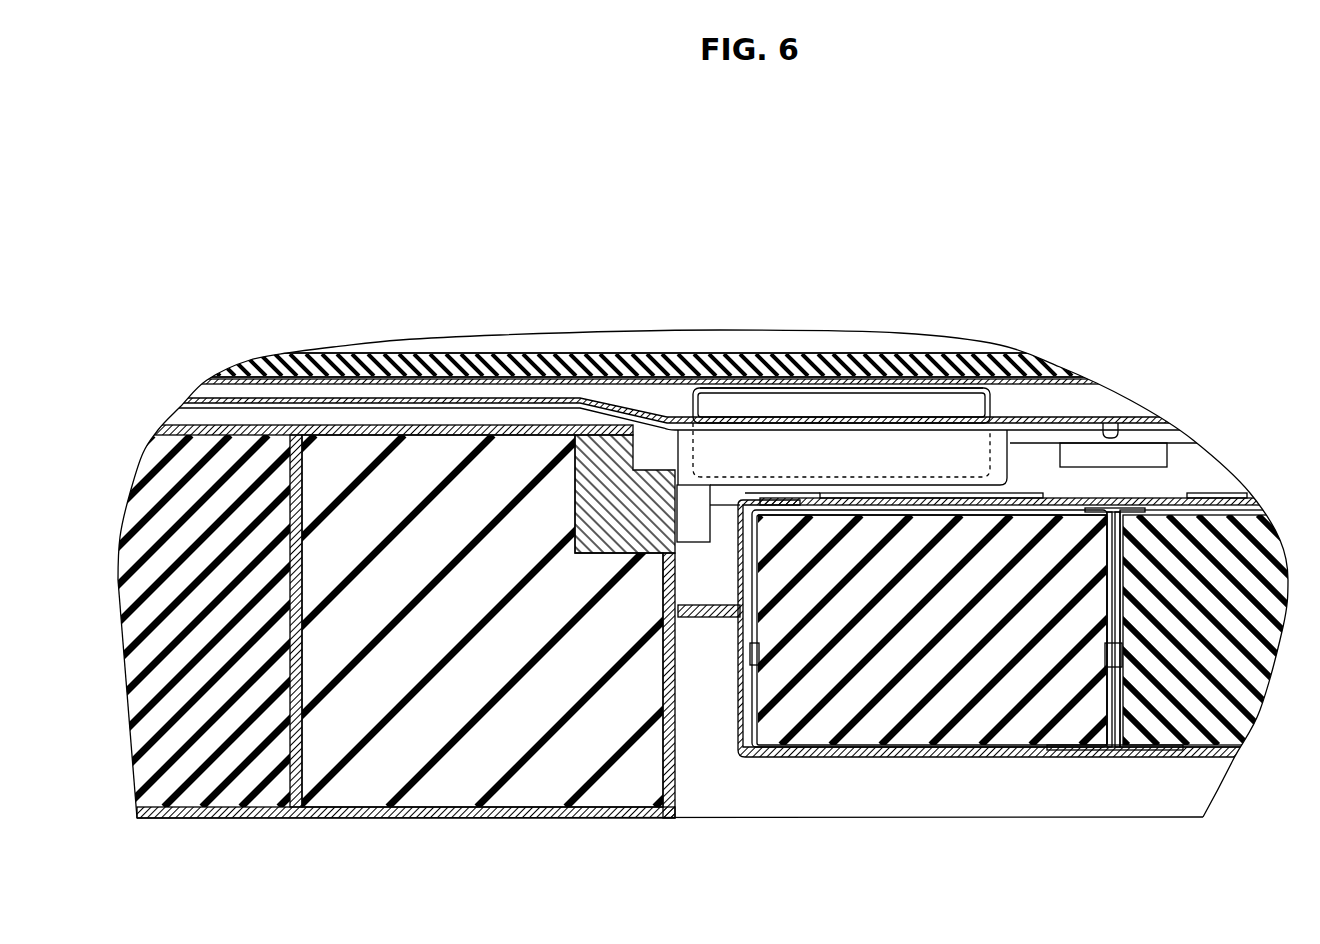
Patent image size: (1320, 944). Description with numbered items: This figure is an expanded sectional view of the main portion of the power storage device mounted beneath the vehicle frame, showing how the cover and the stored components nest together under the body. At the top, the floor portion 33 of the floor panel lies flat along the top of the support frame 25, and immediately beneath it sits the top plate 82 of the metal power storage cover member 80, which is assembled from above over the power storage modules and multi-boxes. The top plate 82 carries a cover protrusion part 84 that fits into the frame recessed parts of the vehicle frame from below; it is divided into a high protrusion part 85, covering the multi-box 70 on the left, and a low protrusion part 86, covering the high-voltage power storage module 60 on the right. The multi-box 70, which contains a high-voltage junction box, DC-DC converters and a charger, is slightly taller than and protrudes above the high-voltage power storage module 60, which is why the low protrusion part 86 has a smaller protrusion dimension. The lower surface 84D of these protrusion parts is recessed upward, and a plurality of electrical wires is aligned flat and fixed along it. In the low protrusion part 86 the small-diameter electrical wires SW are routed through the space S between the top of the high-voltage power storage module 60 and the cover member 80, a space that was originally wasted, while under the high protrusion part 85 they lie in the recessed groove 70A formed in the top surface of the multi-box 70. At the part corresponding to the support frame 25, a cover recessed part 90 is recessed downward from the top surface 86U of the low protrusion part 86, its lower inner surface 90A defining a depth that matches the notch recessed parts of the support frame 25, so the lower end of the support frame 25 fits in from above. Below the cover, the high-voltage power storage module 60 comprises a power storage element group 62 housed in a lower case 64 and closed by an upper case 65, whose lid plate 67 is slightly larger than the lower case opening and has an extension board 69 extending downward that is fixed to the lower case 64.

The multi-box 70 is at (558, 589).
The recessed groove 70A is at (343, 423).
The high protrusion part 85 is at (443, 380).
The cover protrusion part 84 is at (675, 376).
The top plate 82 is at (620, 377).
The support frame 25 is at (688, 412).
The floor portion 33 is at (695, 365).
The cover recessed part 90 is at (842, 407).
The lower inner surface 90A is at (773, 490).
The low protrusion part 86 is at (877, 324).
The top surface 86U is at (866, 405).
The power storage cover member 80 is at (1038, 400).
The lid plate 67 is at (1048, 500).
The lower surface 84D is at (1112, 423).
The upper case 65 is at (1130, 505).
The space S is at (1193, 465).
The small-diameter electrical wire SW is at (479, 412).
The extension board 69 is at (742, 577).
The lower case 64 is at (857, 757).
The power storage element group 62 is at (1160, 693).
The high-voltage power storage module 60 is at (1180, 775).